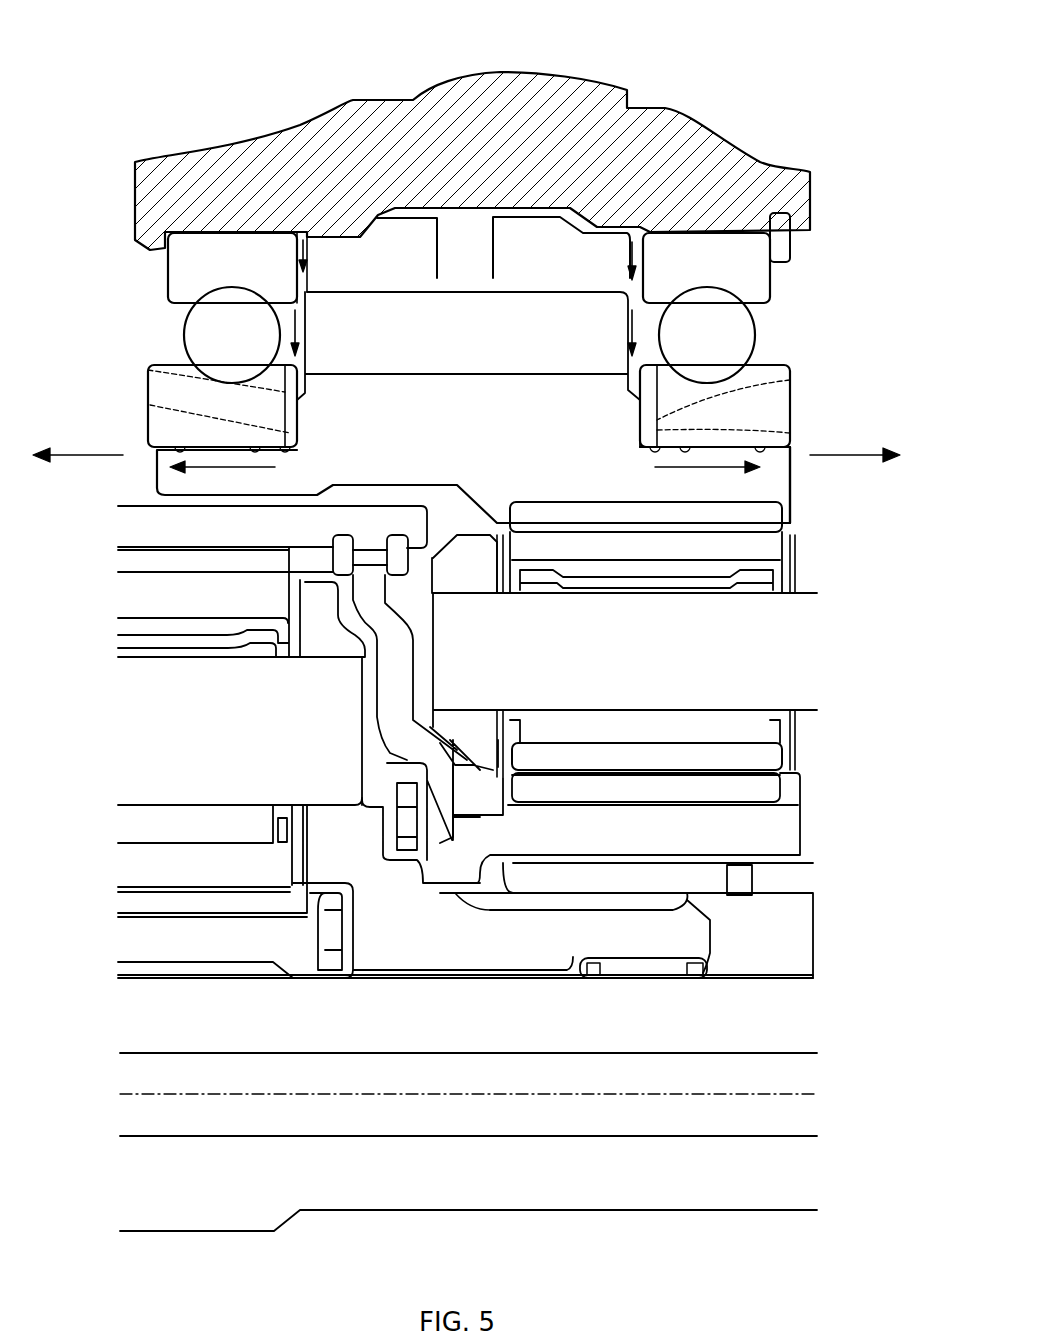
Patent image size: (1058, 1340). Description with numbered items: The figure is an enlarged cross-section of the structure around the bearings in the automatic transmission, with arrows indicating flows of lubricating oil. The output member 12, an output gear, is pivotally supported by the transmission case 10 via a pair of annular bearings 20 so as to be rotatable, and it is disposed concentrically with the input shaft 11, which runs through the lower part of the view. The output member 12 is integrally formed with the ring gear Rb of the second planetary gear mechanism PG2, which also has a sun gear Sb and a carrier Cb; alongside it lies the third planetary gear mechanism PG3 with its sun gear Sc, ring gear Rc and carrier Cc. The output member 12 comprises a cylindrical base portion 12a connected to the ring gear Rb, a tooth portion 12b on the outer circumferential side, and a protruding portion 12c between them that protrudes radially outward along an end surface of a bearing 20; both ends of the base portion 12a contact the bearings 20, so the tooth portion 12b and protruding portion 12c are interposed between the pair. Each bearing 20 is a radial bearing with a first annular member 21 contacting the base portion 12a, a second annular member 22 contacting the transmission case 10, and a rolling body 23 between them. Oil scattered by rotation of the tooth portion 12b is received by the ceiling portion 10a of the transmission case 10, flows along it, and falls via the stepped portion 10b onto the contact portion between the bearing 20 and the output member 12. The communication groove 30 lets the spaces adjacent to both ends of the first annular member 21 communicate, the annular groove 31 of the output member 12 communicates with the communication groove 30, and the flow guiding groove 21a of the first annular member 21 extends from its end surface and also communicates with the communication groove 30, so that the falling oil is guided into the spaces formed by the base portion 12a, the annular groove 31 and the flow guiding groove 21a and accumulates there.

The transmission case 10 is at (705, 160).
The ceiling portion 10a is at (467, 315).
The stepped portion 10b is at (306, 228).
The input shaft 11 is at (749, 1195).
The output member 12 is at (598, 48).
The base portion 12a is at (615, 400).
The tooth portion 12b is at (497, 477).
The protruding portion 12c is at (648, 240).
The bearing 20 is at (842, 293).
The first annular member 21 is at (150, 390).
The flow guiding groove 21a is at (148, 370).
The second annular member 22 is at (168, 290).
The rolling body 23 is at (190, 337).
The communication groove 30 is at (257, 450).
The annular groove 31 is at (150, 405).
The ring gear of the second planetary gear mechanism Rb is at (790, 487).
The ring gear of the third planetary gear mechanism Rc is at (128, 507).
The second planetary gear mechanism PG2 is at (842, 613).
The third planetary gear mechanism PG3 is at (125, 678).
The carrier of the second planetary gear mechanism Cb is at (783, 665).
The carrier of the third planetary gear mechanism Cc is at (137, 718).
The sun gear of the second planetary gear mechanism Sb is at (780, 835).
The sun gear of the third planetary gear mechanism Sc is at (137, 940).